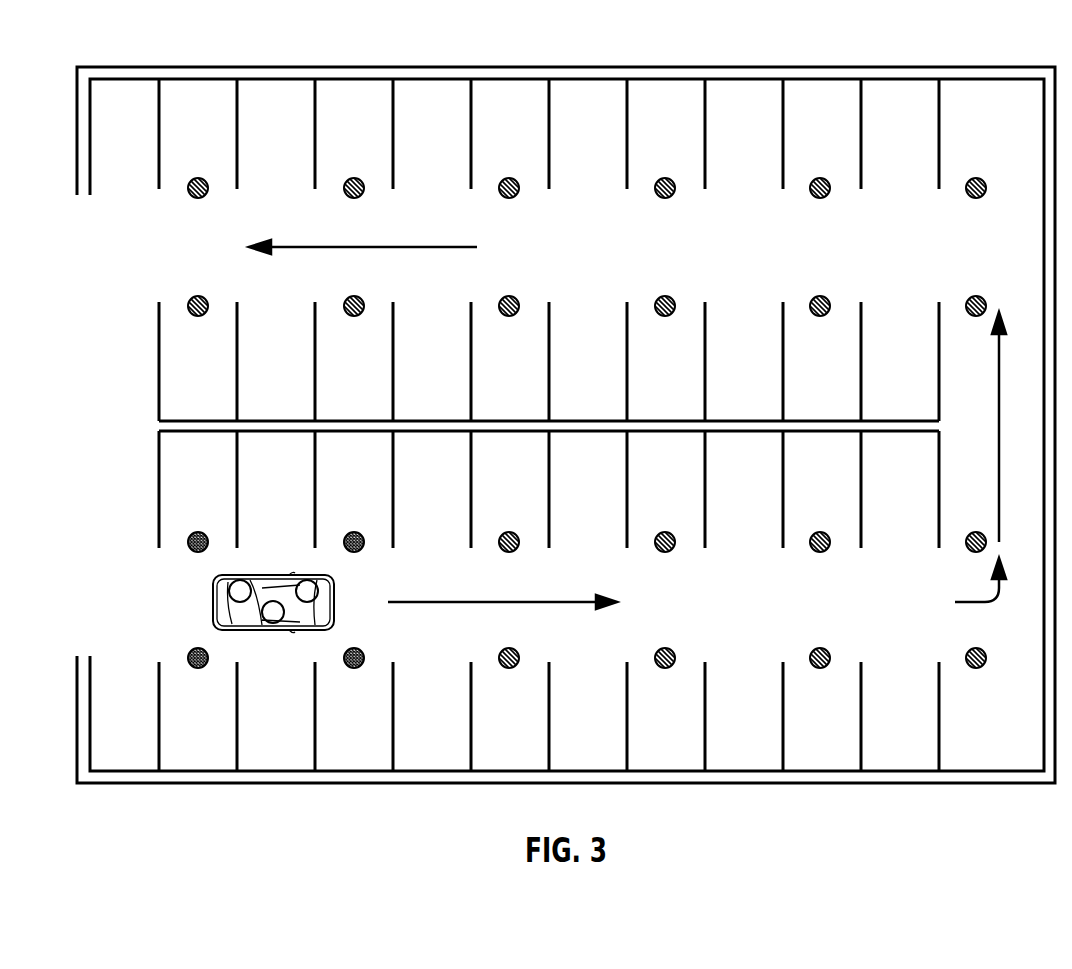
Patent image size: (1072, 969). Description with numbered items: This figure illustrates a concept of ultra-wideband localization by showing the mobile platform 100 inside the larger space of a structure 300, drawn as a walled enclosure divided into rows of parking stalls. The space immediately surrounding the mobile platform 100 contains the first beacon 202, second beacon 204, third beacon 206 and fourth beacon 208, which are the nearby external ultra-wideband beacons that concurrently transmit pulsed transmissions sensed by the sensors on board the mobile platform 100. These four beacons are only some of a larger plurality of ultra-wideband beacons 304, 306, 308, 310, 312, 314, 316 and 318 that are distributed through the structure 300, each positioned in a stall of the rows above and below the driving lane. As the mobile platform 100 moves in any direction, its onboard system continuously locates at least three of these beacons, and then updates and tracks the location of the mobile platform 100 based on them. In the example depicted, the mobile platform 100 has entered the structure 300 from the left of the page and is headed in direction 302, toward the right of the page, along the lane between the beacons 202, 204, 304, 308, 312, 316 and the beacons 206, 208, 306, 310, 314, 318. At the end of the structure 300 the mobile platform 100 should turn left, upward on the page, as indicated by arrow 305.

The structure 300 is at (991, 67).
The mobile platform 100 is at (213, 603).
The first beacon 202 is at (197, 531).
The second beacon 204 is at (353, 531).
The third beacon 206 is at (197, 669).
The fourth beacon 208 is at (353, 669).
The direction 302 is at (480, 600).
The UWB beacon 304 is at (508, 531).
The arrow 305 is at (977, 603).
The UWB beacon 306 is at (508, 669).
The UWB beacon 308 is at (664, 531).
The UWB beacon 310 is at (664, 669).
The UWB beacon 312 is at (819, 531).
The UWB beacon 314 is at (819, 669).
The UWB beacon 316 is at (975, 531).
The UWB beacon 318 is at (975, 669).